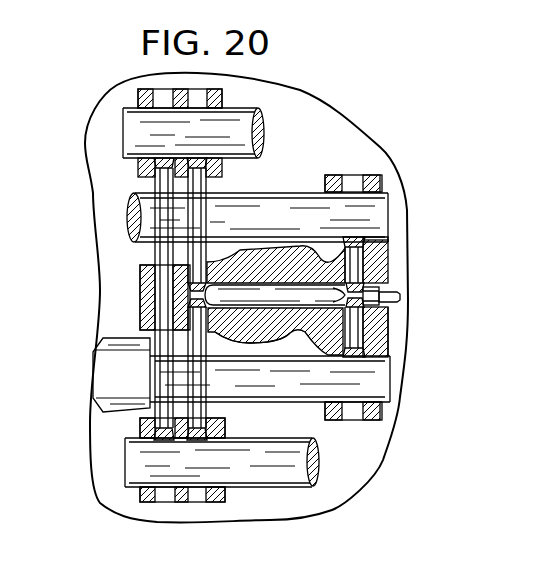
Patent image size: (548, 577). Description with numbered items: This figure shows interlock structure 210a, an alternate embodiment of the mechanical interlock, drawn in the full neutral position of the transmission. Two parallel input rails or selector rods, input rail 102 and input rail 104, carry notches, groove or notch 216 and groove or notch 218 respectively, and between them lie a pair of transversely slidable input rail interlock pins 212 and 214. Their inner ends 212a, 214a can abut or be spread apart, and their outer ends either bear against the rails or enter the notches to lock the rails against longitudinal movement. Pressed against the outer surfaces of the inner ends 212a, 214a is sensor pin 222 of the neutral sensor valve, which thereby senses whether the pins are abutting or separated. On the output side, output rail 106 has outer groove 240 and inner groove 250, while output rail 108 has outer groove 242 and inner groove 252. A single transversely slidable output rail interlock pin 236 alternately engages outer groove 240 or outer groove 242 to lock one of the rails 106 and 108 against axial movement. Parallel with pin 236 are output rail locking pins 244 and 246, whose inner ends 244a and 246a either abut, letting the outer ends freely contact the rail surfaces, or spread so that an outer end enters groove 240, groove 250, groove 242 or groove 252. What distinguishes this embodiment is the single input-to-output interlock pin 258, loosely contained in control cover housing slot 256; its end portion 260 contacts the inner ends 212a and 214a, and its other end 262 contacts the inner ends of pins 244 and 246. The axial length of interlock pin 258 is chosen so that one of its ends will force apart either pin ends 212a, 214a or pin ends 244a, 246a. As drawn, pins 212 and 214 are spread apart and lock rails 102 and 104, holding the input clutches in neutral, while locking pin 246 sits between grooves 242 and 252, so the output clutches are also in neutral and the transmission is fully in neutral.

The interlock structure 210a is at (366, 124).
The output rail 106 is at (255, 104).
The inner groove 250 is at (264, 127).
The outer groove 240 is at (128, 125).
The output rail interlock pin 236 is at (167, 248).
The output rail locking pin 244 is at (200, 216).
The output rail locking pin 246 is at (206, 410).
The inner end of pin 244 244a is at (190, 290).
The inner end of pin 246 246a is at (190, 306).
The control cover housing slot 256 is at (290, 217).
The input rail 102 is at (300, 193).
The groove or notch 216 is at (352, 236).
The end portion of interlock pin 258 260 is at (332, 286).
The input rail interlock pin 212 is at (362, 262).
The inner end of pin 212 212a is at (385, 275).
The input rail interlock pin 214 is at (368, 350).
The inner end of pin 214 214a is at (373, 313).
The sensor pin 222 is at (401, 294).
The input rail 104 is at (387, 408).
The end of interlock pin 258 262 is at (229, 312).
The input-to-output interlock pin 258 is at (292, 312).
The groove or notch 218 is at (376, 370).
The inner groove 252 is at (220, 441).
The output rail 108 is at (320, 460).
The outer groove 242 is at (160, 440).